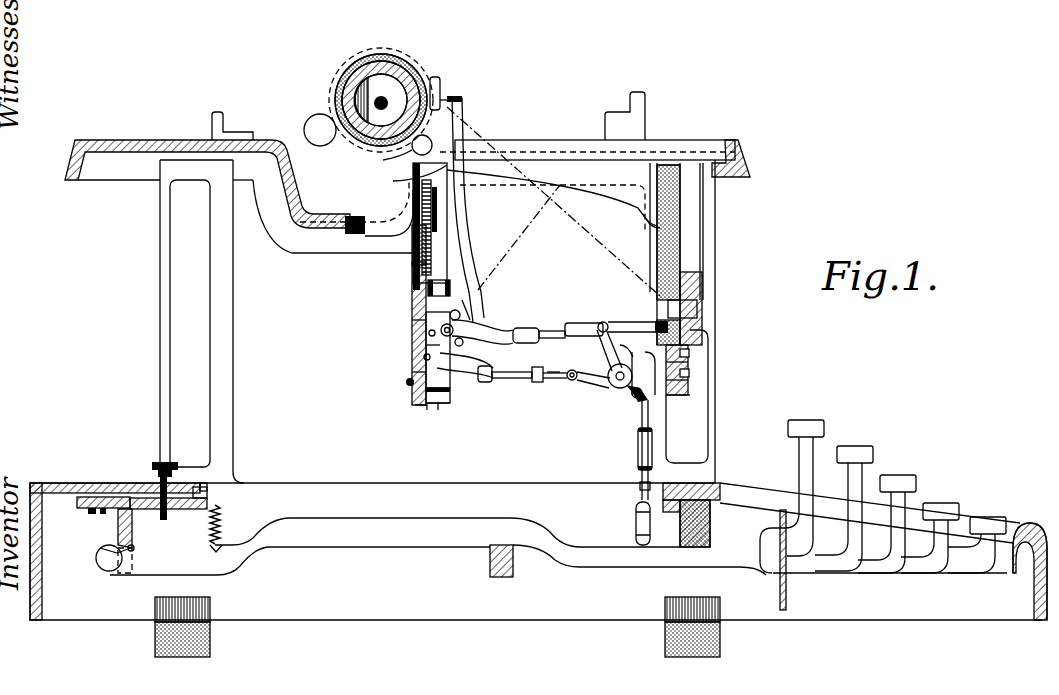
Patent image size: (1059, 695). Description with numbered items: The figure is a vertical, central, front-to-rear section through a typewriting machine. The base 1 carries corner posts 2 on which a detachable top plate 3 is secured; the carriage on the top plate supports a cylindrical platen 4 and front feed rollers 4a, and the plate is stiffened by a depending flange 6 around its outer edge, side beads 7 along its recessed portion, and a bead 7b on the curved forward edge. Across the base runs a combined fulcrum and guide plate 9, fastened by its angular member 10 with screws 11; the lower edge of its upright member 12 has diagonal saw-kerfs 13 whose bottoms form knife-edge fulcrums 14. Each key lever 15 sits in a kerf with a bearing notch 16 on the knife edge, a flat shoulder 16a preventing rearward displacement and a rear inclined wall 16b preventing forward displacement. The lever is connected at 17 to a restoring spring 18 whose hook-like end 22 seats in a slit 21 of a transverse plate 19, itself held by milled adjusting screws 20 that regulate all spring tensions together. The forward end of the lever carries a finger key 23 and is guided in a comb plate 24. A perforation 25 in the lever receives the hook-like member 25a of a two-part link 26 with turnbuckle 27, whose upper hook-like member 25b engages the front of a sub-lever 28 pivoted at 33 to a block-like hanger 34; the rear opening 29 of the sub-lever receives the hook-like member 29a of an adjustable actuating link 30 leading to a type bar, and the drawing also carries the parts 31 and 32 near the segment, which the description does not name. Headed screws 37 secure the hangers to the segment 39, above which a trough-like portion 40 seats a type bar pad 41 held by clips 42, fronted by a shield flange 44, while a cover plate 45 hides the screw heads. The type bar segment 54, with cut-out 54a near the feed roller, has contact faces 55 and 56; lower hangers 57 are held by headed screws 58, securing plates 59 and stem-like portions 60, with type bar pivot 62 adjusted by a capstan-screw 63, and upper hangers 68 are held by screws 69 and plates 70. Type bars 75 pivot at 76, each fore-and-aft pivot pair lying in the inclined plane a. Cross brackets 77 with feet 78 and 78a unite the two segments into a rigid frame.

The base 1 is at (538, 570).
The corner posts 2 is at (437, 321).
The top plate 3 is at (504, 150).
The platen 4 is at (410, 74).
The front feed rollers 4a is at (410, 152).
The depending flange 6 is at (745, 188).
The flanges or beads 7 is at (626, 157).
The bead 7b is at (348, 236).
The combined fulcrum and guide plate 9 is at (118, 512).
The angular member 10 is at (82, 498).
The screws 11 is at (87, 510).
The upright member 12 is at (130, 528).
The saw-kerfs 13 is at (125, 573).
The knife-edge fulcrum 14 is at (134, 547).
The key lever 15 is at (400, 520).
The bearing notch 16 is at (117, 553).
The flat shoulder 16a is at (133, 548).
The rear inclined wall 16b is at (117, 552).
The spring connection 17 is at (213, 548).
The restoring spring 18 is at (220, 520).
The plate 19 is at (187, 509).
The adjusting screws 20 is at (158, 463).
The slits 21 is at (203, 487).
The hook-like ends 22 is at (197, 487).
The finger key 23 is at (848, 447).
The comb plate 24 is at (788, 595).
The perforation 25 is at (637, 545).
The hook-like member 25a is at (647, 527).
The hook-like member 25b is at (645, 400).
The two-part link 26 is at (638, 483).
The turn buckle 27 is at (638, 447).
The sub-lever 28 is at (607, 352).
The opening 29 is at (570, 380).
The hook-like member 29a is at (552, 374).
The actuating link 30 is at (548, 328).
The pivot 31 is at (428, 398).
The arm 32 is at (482, 335).
The pivot 33 is at (620, 390).
The hanger 34 is at (633, 355).
The headed screws 37 is at (685, 358).
The segment 39 is at (672, 387).
The trough-like portion 40 is at (657, 328).
The type bar pad 41 is at (678, 253).
The clips 42 is at (679, 170).
The flange 44 is at (700, 320).
The cover plate 45 is at (693, 385).
The type bar segment 54 is at (412, 340).
The cut-out portion 54a is at (410, 178).
The contact face 55 is at (412, 324).
The contact face 56 is at (412, 307).
The hangers 57 is at (412, 372).
The headed screws 58 is at (447, 390).
The securing plates 59 is at (442, 395).
The stem-like portions 60 is at (438, 410).
The type bar pivot 62 is at (460, 330).
The capstan-screw 63 is at (428, 342).
The hangers 68 is at (464, 318).
The screws 69 is at (456, 282).
The securing plates 70 is at (455, 278).
The type bars 75 is at (460, 212).
The pivot 76 is at (450, 323).
The cross brackets 77 is at (593, 188).
The securing member 78 is at (434, 226).
The securing member 78a is at (647, 223).
The inclined plane a is at (533, 203).